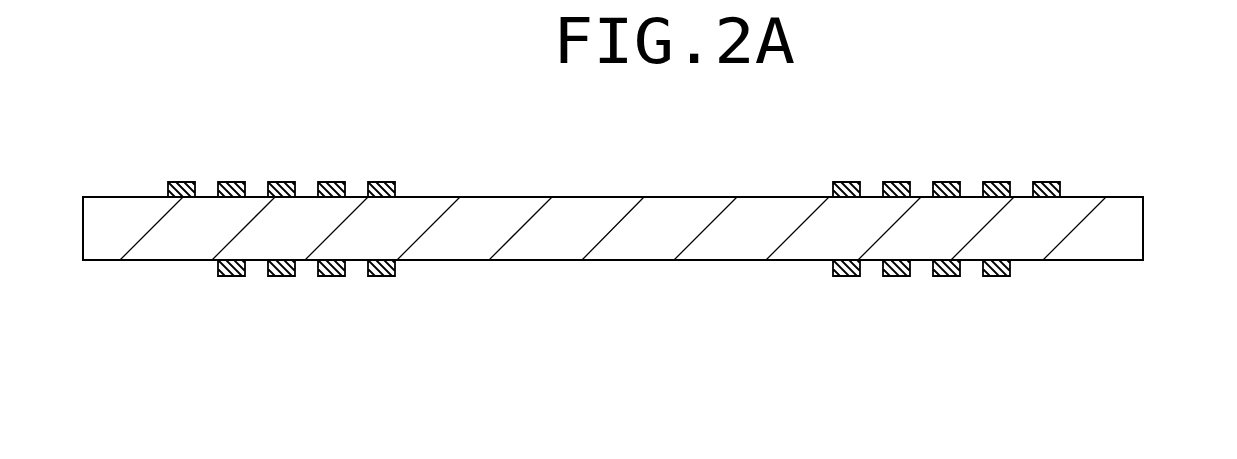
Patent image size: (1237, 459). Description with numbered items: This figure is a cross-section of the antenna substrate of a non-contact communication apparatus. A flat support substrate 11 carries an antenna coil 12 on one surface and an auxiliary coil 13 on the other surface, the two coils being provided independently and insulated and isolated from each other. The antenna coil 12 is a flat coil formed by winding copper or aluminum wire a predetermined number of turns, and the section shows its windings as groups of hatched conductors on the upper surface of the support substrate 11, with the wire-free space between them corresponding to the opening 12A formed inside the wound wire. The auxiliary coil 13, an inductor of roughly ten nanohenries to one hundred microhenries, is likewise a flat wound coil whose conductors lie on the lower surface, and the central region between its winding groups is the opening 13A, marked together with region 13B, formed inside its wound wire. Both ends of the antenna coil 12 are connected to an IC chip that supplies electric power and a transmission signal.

The support substrate 11 is at (1130, 228).
The antenna coil 12 is at (397, 166).
The opening 12A is at (395, 166).
The auxiliary coil 13 is at (397, 291).
The opening 13A is at (612, 306).
The lower electrode region B 13B is at (395, 291).